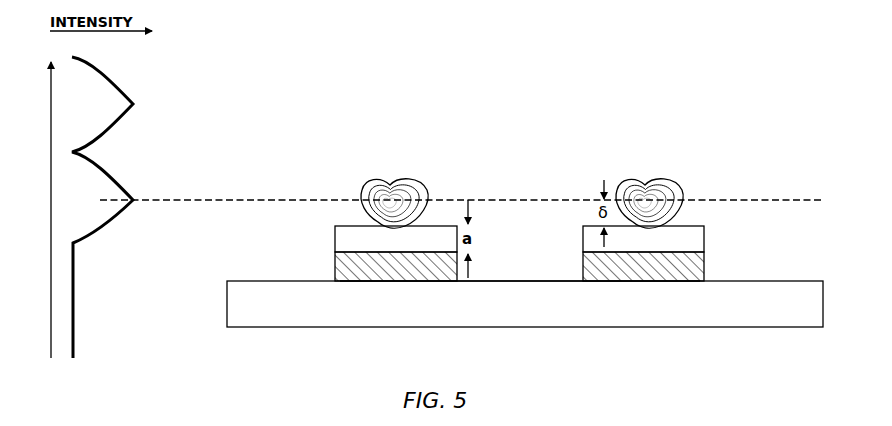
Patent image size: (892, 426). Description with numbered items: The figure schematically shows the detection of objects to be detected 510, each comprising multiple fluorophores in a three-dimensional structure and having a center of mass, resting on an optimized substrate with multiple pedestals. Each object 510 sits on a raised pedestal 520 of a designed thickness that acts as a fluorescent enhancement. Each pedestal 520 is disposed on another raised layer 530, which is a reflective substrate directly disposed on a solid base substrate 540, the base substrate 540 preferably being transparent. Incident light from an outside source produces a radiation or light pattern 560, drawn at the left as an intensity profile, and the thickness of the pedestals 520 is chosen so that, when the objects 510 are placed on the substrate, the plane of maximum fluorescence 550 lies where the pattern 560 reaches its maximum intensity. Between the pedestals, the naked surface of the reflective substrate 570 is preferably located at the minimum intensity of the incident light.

The object to be detected 510 is at (400, 182).
The raised pedestal 520 is at (344, 238).
The raised layer 530 is at (338, 270).
The solid base substrate 540 is at (288, 318).
The plane of maximum fluorescence 550 is at (543, 199).
The radiation pattern 560 is at (135, 104).
The naked surface of the reflective substrate 570 is at (520, 282).